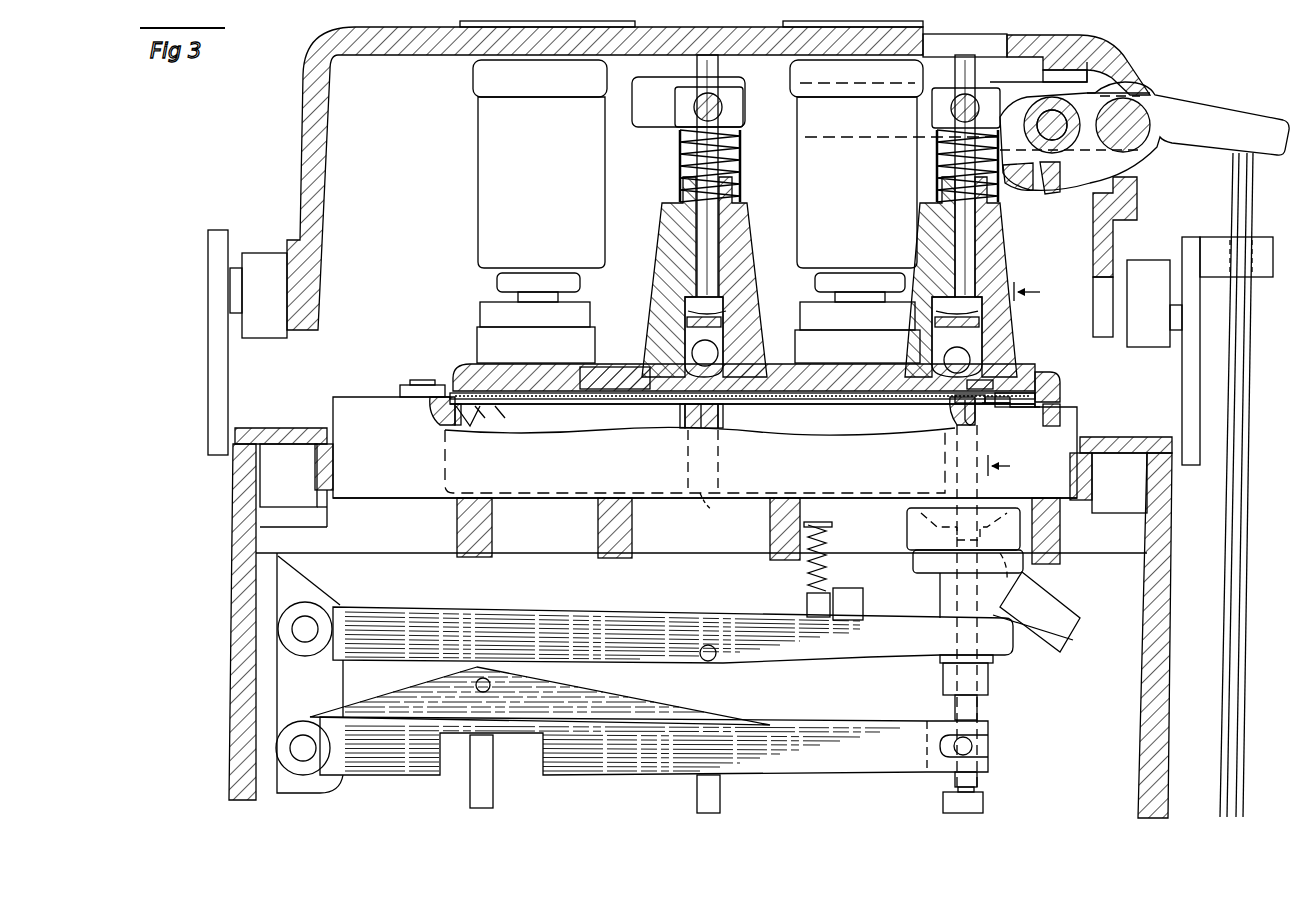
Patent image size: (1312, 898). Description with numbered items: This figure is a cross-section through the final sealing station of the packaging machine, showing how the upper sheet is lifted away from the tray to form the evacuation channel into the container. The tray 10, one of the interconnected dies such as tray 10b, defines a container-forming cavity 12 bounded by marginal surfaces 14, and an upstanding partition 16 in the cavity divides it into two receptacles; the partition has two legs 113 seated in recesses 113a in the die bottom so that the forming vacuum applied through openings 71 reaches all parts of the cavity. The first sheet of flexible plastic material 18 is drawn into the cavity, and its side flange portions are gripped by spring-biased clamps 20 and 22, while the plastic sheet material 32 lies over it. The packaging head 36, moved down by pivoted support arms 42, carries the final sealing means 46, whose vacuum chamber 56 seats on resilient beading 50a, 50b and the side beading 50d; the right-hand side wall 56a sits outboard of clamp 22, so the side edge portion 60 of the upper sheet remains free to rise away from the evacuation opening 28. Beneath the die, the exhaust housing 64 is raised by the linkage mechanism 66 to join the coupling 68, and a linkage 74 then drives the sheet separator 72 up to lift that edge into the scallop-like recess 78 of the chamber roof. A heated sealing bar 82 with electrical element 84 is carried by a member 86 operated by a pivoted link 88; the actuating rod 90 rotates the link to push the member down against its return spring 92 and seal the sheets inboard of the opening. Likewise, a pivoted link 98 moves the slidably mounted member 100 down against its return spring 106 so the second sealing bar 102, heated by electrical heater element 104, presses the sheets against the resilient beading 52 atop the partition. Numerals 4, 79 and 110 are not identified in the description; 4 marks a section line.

The section line of FIG. 4 is at (1020, 380).
The tray 10 is at (330, 415).
The tray 10b is at (413, 490).
The container-forming cavity 12 is at (600, 429).
The marginal surfaces 14 is at (446, 422).
The upstanding partition 16 is at (698, 426).
The first sheet of flexible plastic material 18 is at (455, 412).
The spring-biased clamp 20 is at (405, 386).
The spring-biased clamp 22 is at (1003, 410).
The evacuation opening 28 is at (982, 418).
The plastic sheet material 32 is at (775, 388).
The packaging head 36 is at (298, 137).
The pivoted support arms 42 is at (215, 375).
The final sealing means 46 is at (460, 366).
The resilient beading 50a is at (442, 418).
The resilient beading 50b is at (953, 416).
The side beading 50d is at (1052, 418).
The resilient beading 52 is at (685, 411).
The vacuum chamber 56 is at (778, 370).
The right-hand side wall 56a is at (1062, 390).
The side edge portion 60 is at (980, 392).
The exhaust housing 64 is at (942, 592).
The linkage mechanism 66 is at (640, 615).
The coupling 68 is at (910, 530).
The openings 71 is at (932, 493).
The sheet separator 72 is at (958, 408).
The linkage 74 is at (630, 750).
The scallop-like recess 78 is at (588, 396).
The plate portion 79 is at (1028, 393).
The sealing bar 82 is at (970, 383).
The electrical element 84 is at (940, 358).
The member 86 is at (962, 230).
The pivoted link 88 is at (1203, 118).
The actuating rod 90 is at (1238, 592).
The return spring 92 is at (945, 160).
The pivoted link 98 is at (655, 113).
The slidably mounted member 100 is at (705, 237).
The second sealing bar 102 is at (690, 350).
The electrical heater element 104 is at (718, 360).
The return spring 106 is at (738, 185).
The rod bracket 110 is at (1265, 258).
The legs 113 is at (700, 490).
The recesses 113a is at (732, 510).